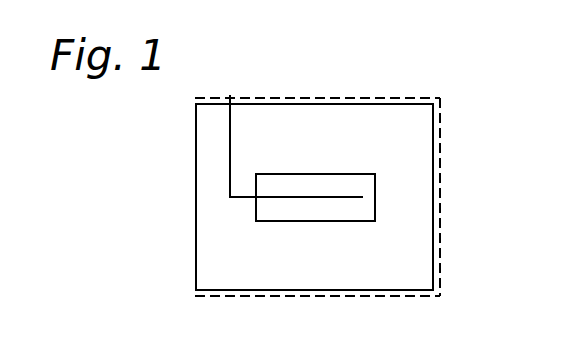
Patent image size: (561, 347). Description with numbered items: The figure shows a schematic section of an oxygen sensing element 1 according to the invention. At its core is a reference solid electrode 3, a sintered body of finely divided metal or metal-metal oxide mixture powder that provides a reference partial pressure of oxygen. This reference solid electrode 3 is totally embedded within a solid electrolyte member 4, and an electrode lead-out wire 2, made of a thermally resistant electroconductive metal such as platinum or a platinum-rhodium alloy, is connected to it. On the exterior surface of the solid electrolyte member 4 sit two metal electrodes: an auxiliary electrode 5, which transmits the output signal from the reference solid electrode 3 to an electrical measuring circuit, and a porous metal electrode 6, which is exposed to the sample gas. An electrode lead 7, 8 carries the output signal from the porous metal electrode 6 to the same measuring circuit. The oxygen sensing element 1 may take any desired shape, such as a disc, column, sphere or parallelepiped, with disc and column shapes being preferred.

The oxygen sensing element 1 is at (190, 128).
The electrode lead-out wire 2 is at (229, 158).
The reference solid electrode 3 is at (270, 210).
The solid electrolyte member 4 is at (420, 145).
The auxiliary electrode 5 is at (230, 95).
The porous metal electrode 6 is at (406, 300).
The electrode lead 7 is at (440, 183).
The electrode lead 8 is at (400, 98).